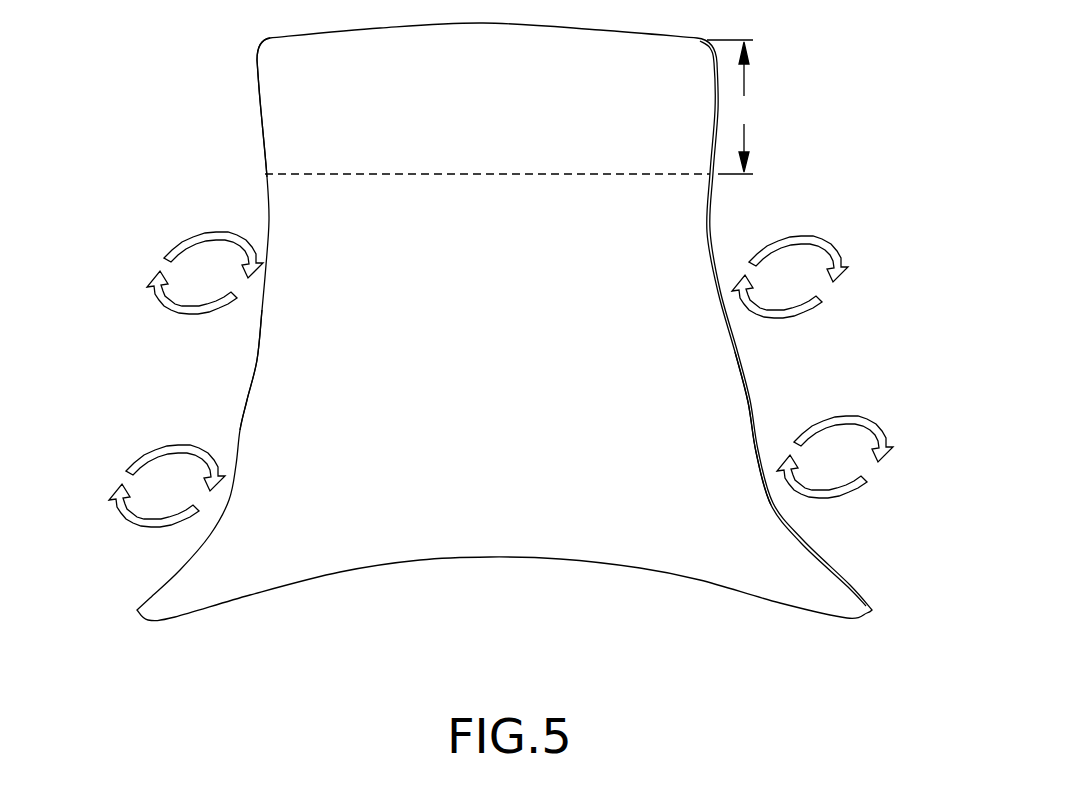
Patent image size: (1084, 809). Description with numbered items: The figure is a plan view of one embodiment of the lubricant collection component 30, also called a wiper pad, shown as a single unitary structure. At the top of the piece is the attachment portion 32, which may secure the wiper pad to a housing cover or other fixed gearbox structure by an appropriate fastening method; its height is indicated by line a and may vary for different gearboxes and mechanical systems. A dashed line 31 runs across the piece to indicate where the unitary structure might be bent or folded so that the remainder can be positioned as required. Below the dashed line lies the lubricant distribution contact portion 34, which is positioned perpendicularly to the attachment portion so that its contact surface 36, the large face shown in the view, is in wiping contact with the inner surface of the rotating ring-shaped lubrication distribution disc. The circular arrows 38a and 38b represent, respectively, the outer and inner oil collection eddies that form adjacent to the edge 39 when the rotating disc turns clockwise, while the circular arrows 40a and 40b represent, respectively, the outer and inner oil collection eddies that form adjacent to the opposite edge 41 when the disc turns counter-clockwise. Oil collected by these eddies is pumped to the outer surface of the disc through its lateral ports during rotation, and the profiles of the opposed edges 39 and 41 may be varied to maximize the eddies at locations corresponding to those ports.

The lubricant collection component 30 is at (431, 574).
The dashed line 31 is at (265, 174).
The attachment portion 32 is at (274, 100).
The lubricant distribution contact portion 34 is at (690, 221).
The contact surface 36 is at (500, 314).
The circular arrow 38a is at (152, 288).
The circular arrow 38b is at (120, 480).
The edge 39 is at (260, 352).
The circular arrow 40a is at (840, 244).
The circular arrow 40b is at (888, 424).
The edge 41 is at (743, 377).
The line a is at (730, 107).